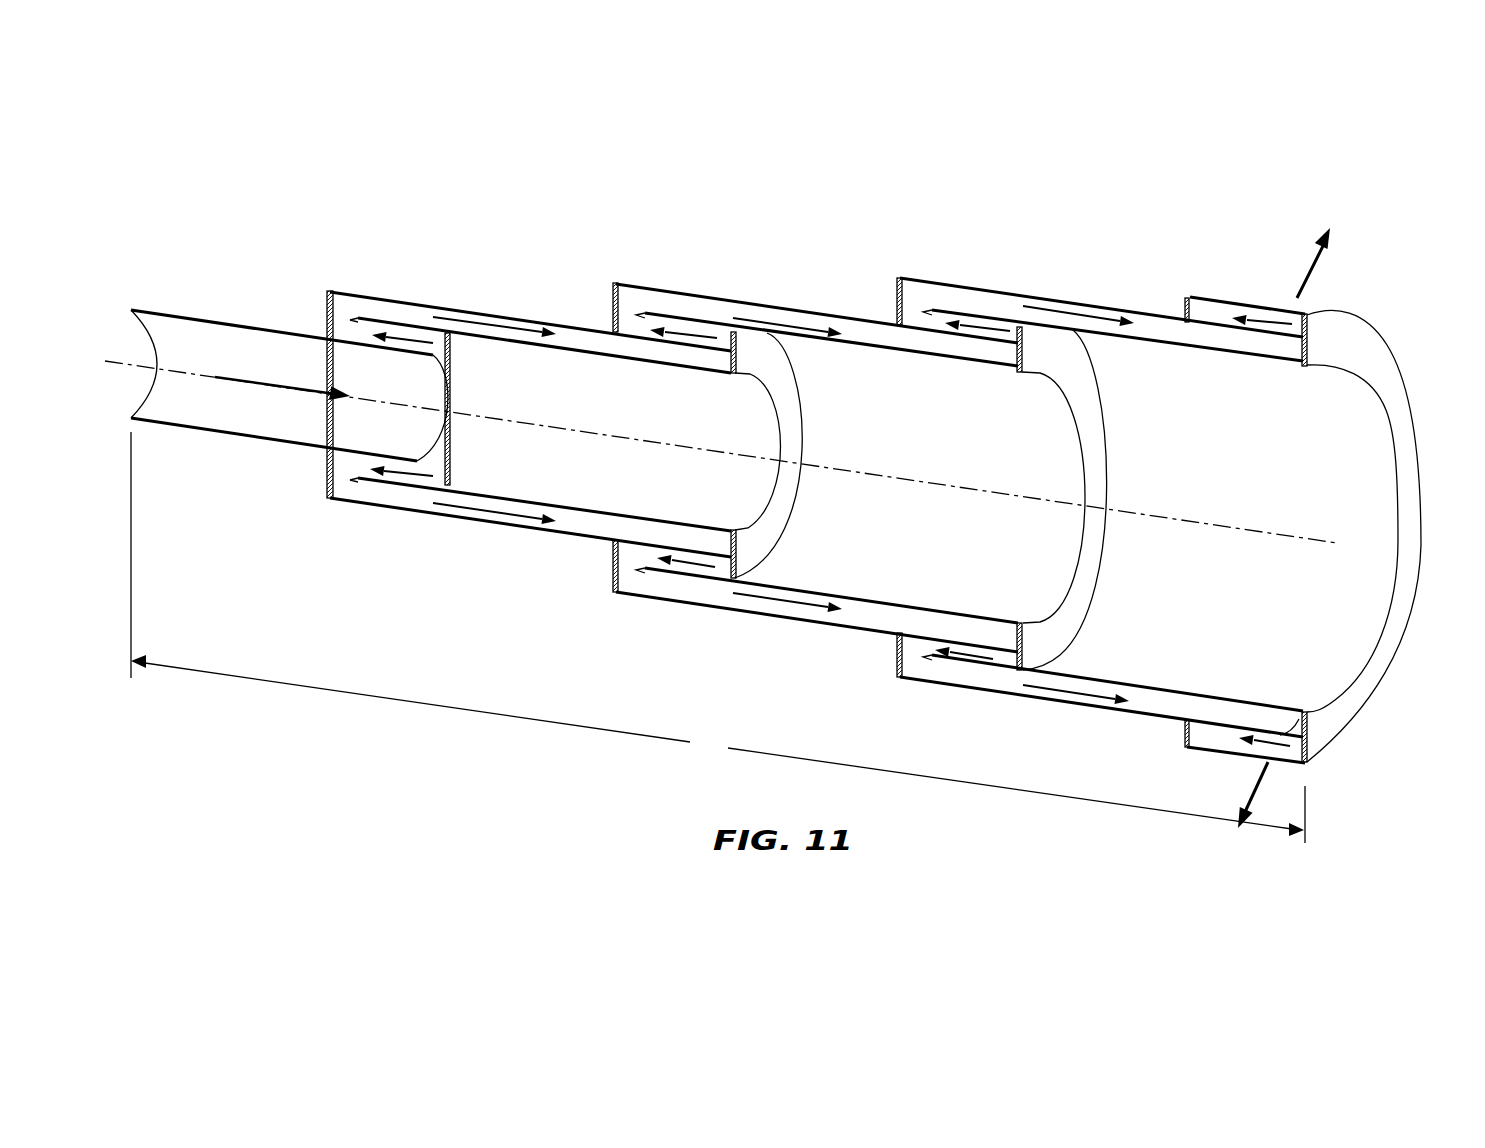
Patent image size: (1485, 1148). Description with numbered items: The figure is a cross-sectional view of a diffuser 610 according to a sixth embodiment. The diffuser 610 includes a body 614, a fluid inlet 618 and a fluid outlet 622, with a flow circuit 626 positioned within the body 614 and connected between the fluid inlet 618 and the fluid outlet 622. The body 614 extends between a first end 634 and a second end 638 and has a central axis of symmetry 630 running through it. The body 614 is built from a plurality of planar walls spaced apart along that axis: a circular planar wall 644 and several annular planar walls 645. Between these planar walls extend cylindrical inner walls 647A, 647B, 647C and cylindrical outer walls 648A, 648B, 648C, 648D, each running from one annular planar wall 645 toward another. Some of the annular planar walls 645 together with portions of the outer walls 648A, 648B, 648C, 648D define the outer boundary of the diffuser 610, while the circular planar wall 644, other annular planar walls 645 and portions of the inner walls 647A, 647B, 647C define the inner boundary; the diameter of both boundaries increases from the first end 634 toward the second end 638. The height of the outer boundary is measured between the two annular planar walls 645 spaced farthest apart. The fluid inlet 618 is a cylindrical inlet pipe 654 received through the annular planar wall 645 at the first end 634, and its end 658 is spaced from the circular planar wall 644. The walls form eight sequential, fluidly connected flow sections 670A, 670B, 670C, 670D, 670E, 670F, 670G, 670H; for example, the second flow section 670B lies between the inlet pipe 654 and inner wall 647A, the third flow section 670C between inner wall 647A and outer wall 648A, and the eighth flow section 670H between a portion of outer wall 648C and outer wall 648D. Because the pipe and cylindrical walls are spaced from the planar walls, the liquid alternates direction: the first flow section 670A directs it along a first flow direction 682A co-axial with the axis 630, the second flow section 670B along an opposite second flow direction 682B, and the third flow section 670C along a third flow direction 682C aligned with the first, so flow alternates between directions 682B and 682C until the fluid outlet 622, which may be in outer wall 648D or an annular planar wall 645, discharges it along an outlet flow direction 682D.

The diffuser 610 is at (1030, 185).
The body 614 is at (810, 622).
The fluid inlet 618 is at (310, 427).
The fluid outlet 622 is at (1350, 277).
The flow circuit 626 is at (1143, 713).
The central axis of symmetry 630 is at (1265, 530).
The first end 634 is at (320, 477).
The second end 638 is at (1333, 741).
The planar wall 644 is at (457, 450).
The planar walls 645 is at (325, 300).
The cylindrical inner wall 647A is at (587, 510).
The cylindrical inner wall 647B is at (880, 602).
The cylindrical inner wall 647C is at (1182, 700).
The cylindrical outer wall 648A is at (448, 305).
The cylindrical outer wall 648B is at (697, 292).
The cylindrical outer wall 648C is at (990, 287).
The cylindrical outer wall 648D is at (1247, 300).
The cylindrical inlet pipe 654 is at (215, 430).
The end 658 is at (470, 335).
The first flow section 670A is at (305, 360).
The second flow section 670B is at (411, 494).
The third flow section 670C is at (557, 317).
The fourth flow section 670D is at (717, 585).
The fifth flow section 670E is at (853, 312).
The sixth flow section 670F is at (1003, 673).
The seventh flow section 670G is at (1010, 292).
The eighth flow section 670H is at (1233, 758).
The first flow direction 682A is at (243, 378).
The second flow direction 682B is at (390, 333).
The third flow direction 682C is at (497, 520).
The outlet flow direction 682D is at (1303, 258).